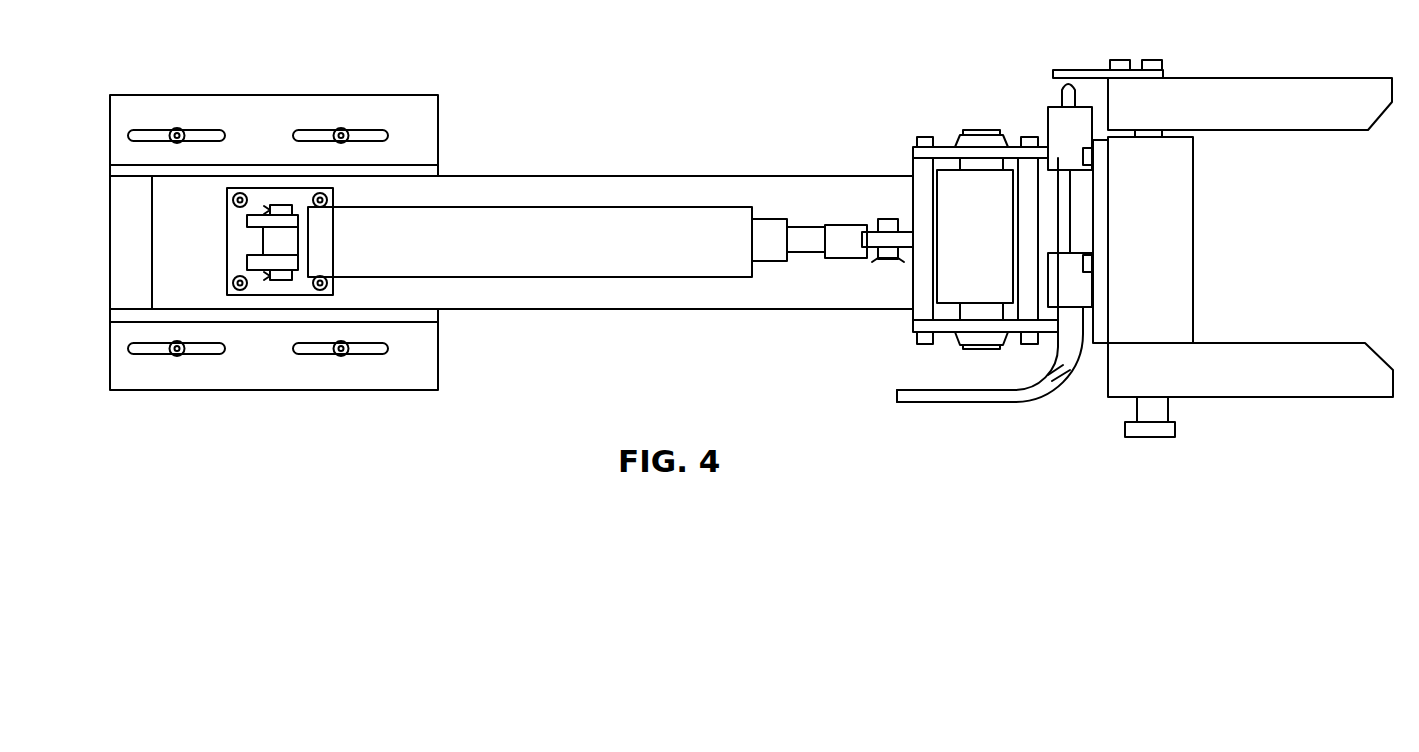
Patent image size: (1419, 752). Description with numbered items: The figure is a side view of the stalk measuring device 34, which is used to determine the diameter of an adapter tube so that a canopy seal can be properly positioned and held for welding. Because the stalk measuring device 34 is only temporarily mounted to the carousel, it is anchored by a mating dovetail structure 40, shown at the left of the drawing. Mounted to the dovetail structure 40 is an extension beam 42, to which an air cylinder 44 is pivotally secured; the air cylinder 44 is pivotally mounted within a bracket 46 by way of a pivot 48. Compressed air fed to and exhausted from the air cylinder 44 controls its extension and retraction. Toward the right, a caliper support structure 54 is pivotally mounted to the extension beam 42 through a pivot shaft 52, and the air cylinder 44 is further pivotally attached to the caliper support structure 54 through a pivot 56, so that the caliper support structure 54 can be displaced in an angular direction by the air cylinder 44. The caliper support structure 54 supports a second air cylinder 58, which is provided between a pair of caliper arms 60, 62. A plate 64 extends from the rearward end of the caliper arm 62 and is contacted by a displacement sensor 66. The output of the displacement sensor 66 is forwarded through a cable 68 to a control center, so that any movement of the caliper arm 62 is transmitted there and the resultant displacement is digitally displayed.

The stalk measuring device 34 is at (657, 170).
The mating dovetail structure 40 is at (373, 391).
The extension beam 42 is at (675, 311).
The air cylinder 44 is at (570, 230).
The bracket 46 is at (247, 226).
The pivot 48 is at (279, 206).
The pivot shaft 52 is at (977, 130).
The caliper support structure 54 is at (943, 147).
The pivot 56 is at (888, 218).
The air cylinder 58 is at (1165, 243).
The caliper arm 60 is at (1280, 380).
The caliper arm 62 is at (1238, 86).
The plate 64 is at (1082, 75).
The displacement sensor 66 is at (1058, 120).
The cable 68 is at (970, 396).